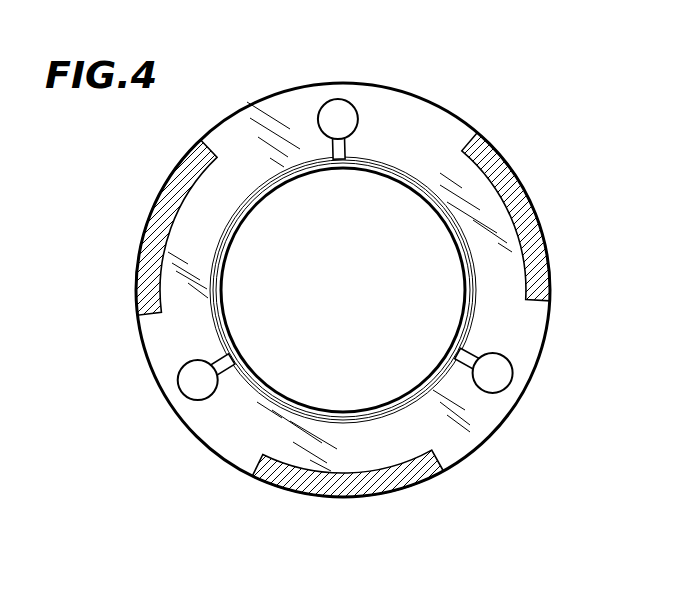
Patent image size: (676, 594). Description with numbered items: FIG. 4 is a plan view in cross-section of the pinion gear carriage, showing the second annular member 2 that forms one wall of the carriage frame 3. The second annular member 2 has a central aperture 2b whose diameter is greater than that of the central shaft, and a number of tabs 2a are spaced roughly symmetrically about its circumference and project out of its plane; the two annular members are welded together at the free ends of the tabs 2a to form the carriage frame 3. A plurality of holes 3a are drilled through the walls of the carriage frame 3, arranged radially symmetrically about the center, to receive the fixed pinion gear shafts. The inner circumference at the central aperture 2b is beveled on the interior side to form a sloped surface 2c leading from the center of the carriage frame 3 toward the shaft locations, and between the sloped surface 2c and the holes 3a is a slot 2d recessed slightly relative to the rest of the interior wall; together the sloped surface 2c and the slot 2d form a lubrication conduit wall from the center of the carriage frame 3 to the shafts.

The second annular member 2 is at (450, 112).
The tabs 2a is at (519, 203).
The central aperture 2b is at (437, 193).
The sloped surface 2c is at (464, 283).
The slot 2d is at (350, 148).
The carriage frame 3 is at (278, 93).
The holes 3a is at (347, 101).